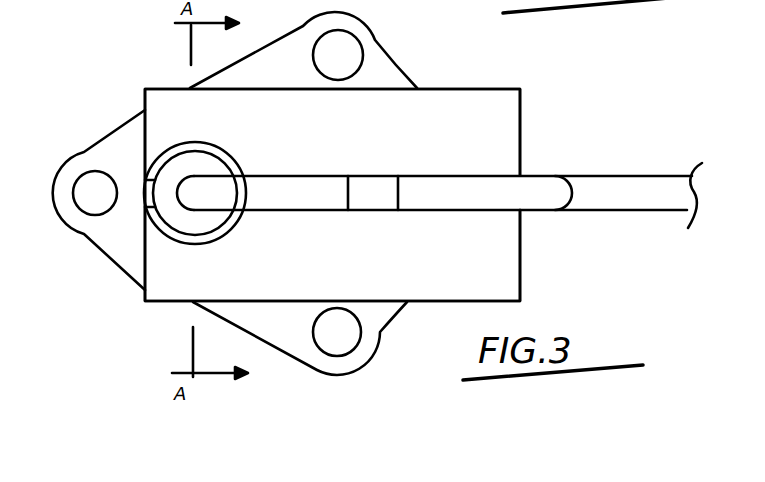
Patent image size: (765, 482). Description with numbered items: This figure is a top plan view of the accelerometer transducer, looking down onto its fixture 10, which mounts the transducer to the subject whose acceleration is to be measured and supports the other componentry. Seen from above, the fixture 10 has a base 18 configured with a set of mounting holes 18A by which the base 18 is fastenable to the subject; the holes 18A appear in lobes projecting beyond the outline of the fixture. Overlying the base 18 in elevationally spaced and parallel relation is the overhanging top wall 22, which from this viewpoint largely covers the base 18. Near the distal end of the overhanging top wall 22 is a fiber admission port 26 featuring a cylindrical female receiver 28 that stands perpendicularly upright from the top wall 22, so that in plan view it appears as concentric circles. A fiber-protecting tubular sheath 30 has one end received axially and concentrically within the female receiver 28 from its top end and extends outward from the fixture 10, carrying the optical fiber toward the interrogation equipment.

The fixture 10 is at (530, 124).
The base 18 is at (117, 238).
The mounting holes 18A is at (385, 0).
The overhanging top wall 22 is at (453, 102).
The fiber admission port 26 is at (196, 161).
The cylindrical female receiver 28 is at (205, 168).
The fiber-protecting tubular sheath 30 is at (437, 188).